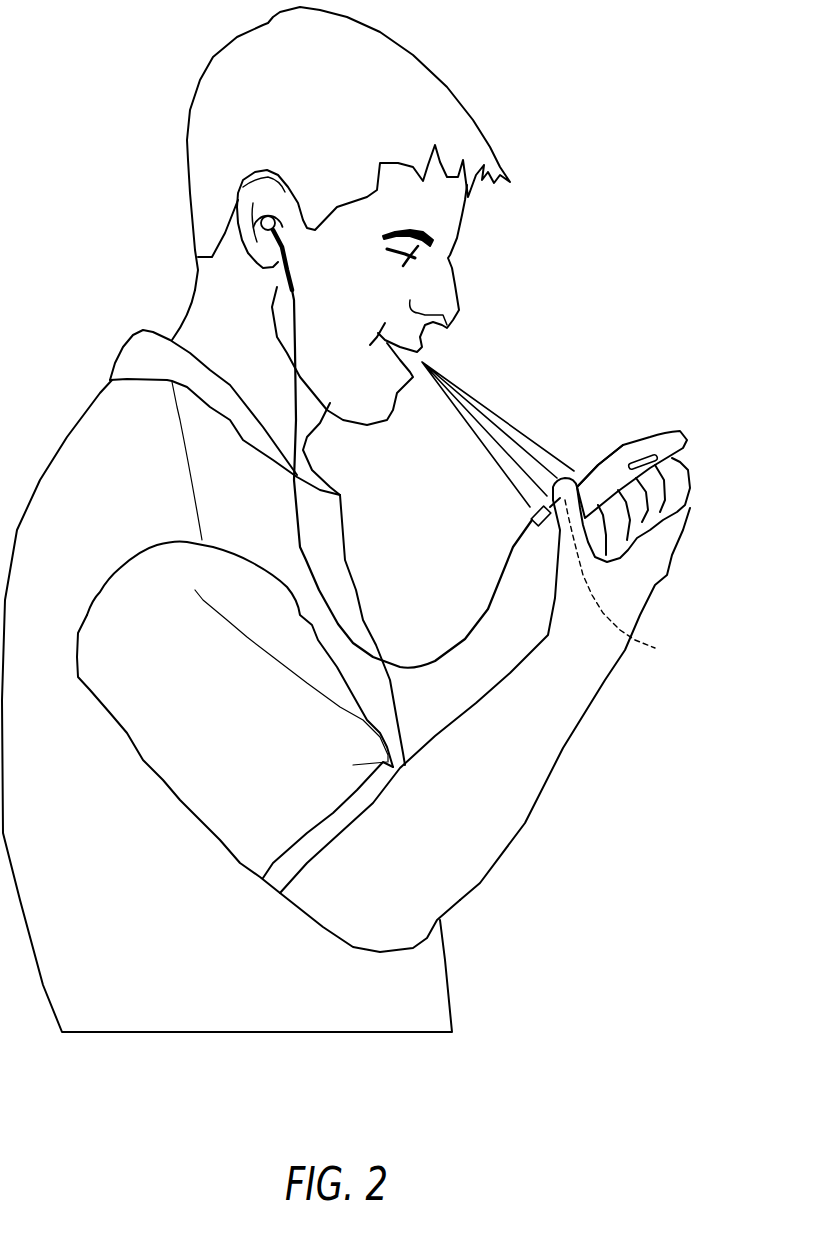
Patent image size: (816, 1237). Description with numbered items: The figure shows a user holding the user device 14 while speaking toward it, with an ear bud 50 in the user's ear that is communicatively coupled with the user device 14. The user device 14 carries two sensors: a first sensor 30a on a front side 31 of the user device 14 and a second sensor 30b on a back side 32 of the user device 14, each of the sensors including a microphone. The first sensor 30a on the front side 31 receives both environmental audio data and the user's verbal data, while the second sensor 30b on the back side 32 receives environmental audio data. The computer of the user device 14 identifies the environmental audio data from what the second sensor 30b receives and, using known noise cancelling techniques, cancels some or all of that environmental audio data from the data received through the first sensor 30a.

The user device 14 is at (655, 434).
The first sensor 30a is at (655, 648).
The second sensor 30b is at (660, 457).
The front side 31 is at (604, 456).
The back side 32 is at (643, 538).
The ear bud 50 is at (263, 212).